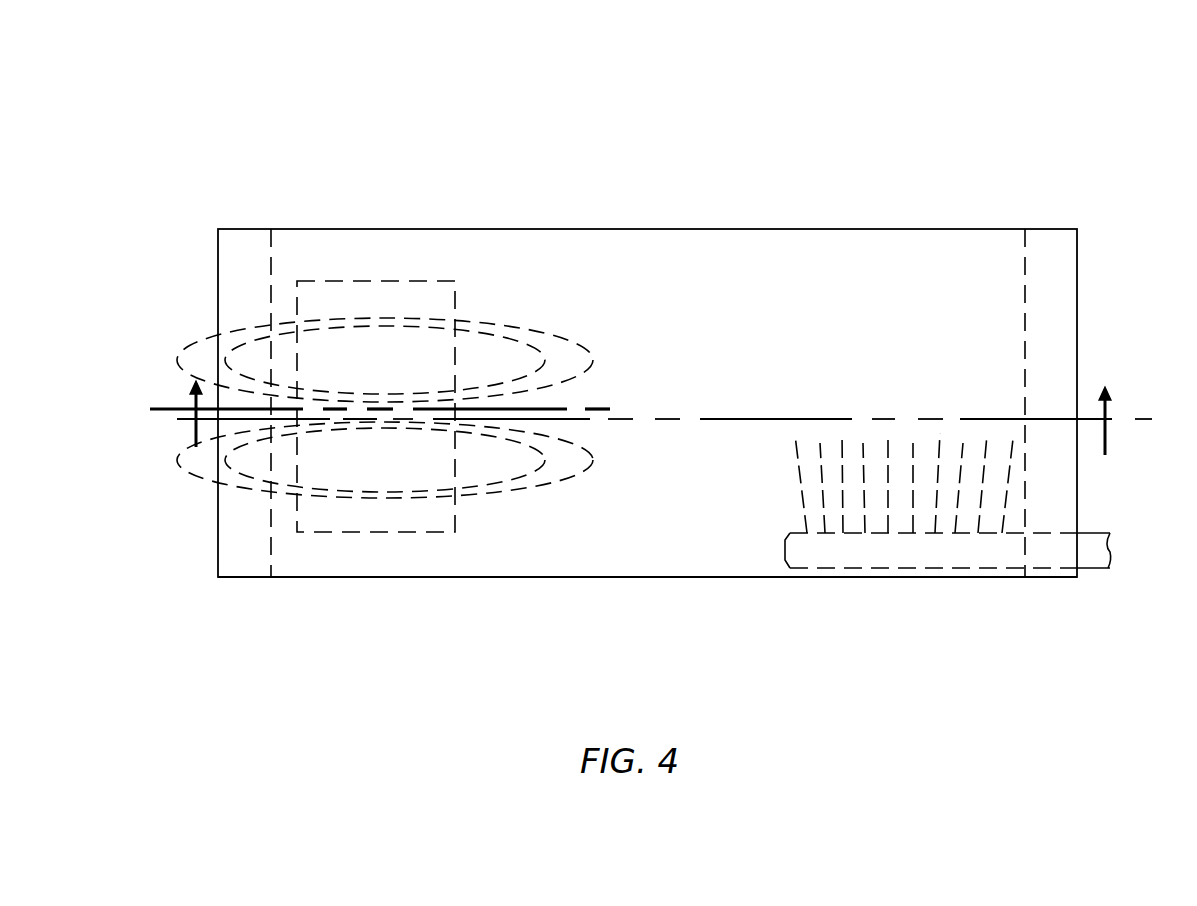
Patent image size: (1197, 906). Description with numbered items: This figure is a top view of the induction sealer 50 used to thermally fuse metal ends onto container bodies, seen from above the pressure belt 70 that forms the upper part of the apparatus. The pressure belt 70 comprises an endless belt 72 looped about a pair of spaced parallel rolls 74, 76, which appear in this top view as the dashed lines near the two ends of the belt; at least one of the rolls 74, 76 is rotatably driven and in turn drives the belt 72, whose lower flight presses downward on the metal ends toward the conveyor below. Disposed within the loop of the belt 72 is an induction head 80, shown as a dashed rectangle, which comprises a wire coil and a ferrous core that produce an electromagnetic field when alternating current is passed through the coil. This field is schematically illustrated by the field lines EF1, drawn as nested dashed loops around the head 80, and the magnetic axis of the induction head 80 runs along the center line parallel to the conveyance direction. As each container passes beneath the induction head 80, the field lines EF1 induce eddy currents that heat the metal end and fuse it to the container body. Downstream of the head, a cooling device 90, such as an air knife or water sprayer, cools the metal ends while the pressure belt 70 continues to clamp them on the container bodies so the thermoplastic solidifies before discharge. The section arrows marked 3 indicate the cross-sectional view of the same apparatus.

The induction sealer 50 is at (1047, 124).
The pressure belt 70 is at (953, 230).
The endless belt 72 is at (720, 564).
The roll 74 is at (271, 560).
The roll 76 is at (1022, 318).
The induction head 80 is at (373, 293).
The cooling device 90 is at (918, 569).
The field lines EF1 is at (388, 500).
The section line 3- 3 is at (654, 414).